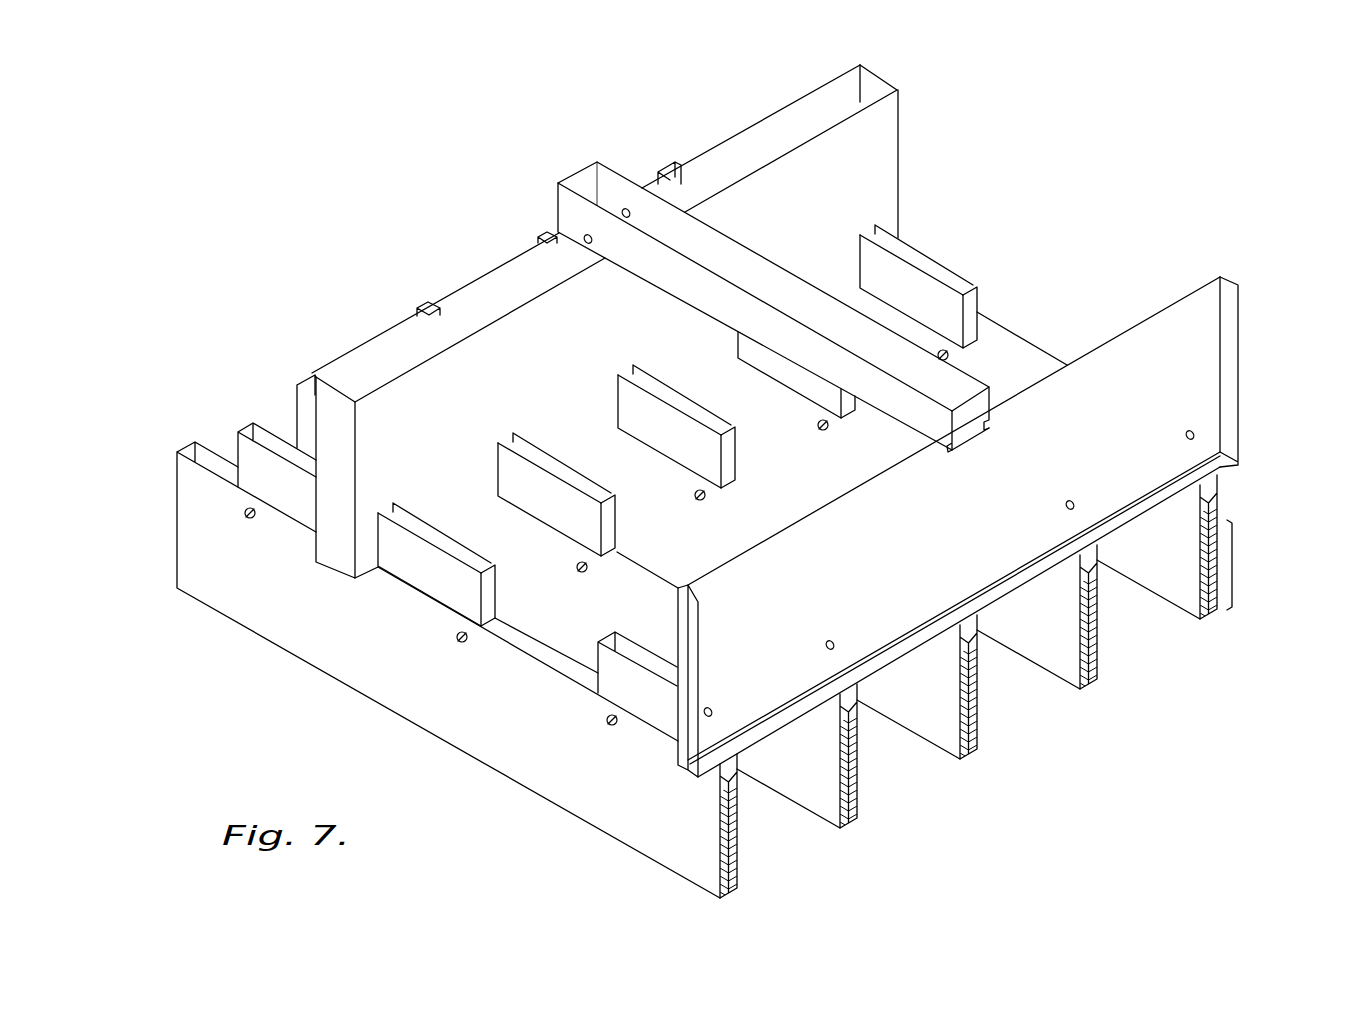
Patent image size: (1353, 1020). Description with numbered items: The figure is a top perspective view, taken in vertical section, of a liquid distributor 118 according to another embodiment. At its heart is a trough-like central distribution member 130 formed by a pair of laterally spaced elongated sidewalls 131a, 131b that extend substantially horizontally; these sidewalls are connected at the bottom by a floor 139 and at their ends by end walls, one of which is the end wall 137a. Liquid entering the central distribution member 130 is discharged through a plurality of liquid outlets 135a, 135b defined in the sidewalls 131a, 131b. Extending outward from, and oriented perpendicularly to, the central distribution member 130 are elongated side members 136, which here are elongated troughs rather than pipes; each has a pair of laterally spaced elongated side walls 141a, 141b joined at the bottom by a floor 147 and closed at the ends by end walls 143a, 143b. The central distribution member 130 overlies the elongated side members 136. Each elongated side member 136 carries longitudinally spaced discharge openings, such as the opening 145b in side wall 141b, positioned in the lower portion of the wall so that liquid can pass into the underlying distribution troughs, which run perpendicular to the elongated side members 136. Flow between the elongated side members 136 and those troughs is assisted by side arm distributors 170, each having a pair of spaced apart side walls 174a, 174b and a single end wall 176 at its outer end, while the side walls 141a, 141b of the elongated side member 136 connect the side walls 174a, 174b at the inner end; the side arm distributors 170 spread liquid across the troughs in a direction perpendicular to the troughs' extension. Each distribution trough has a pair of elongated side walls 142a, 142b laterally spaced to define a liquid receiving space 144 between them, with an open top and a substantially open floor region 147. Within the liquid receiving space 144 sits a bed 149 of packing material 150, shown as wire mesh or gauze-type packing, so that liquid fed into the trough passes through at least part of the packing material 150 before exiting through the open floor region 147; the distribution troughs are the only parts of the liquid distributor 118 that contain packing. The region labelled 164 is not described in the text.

The liquid distributor 118 is at (436, 125).
The central distribution member 130 is at (1010, 378).
The sidewall 131a is at (658, 275).
The sidewall 131b is at (770, 275).
The liquid outlet 135a is at (584, 236).
The liquid outlet 135b is at (626, 209).
The elongated side member 136 is at (757, 120).
The end wall 137a is at (586, 176).
The floor 139 is at (985, 435).
The side wall 141a is at (888, 145).
The side wall 141b is at (836, 97).
The side wall 142a is at (692, 860).
The side wall 142b is at (737, 851).
The end wall 143a is at (335, 412).
The end wall 143b is at (878, 82).
The liquid receiving space 144 is at (980, 658).
The opening 145b is at (1194, 434).
The floor 147 is at (1228, 470).
The bed 149 is at (1236, 565).
The packing material 150 is at (1100, 667).
The deck floor 164 is at (560, 656).
The side arm distributor 170 is at (407, 510).
The side wall 174a is at (910, 277).
The side wall 174b is at (970, 273).
The end wall 176 is at (972, 298).